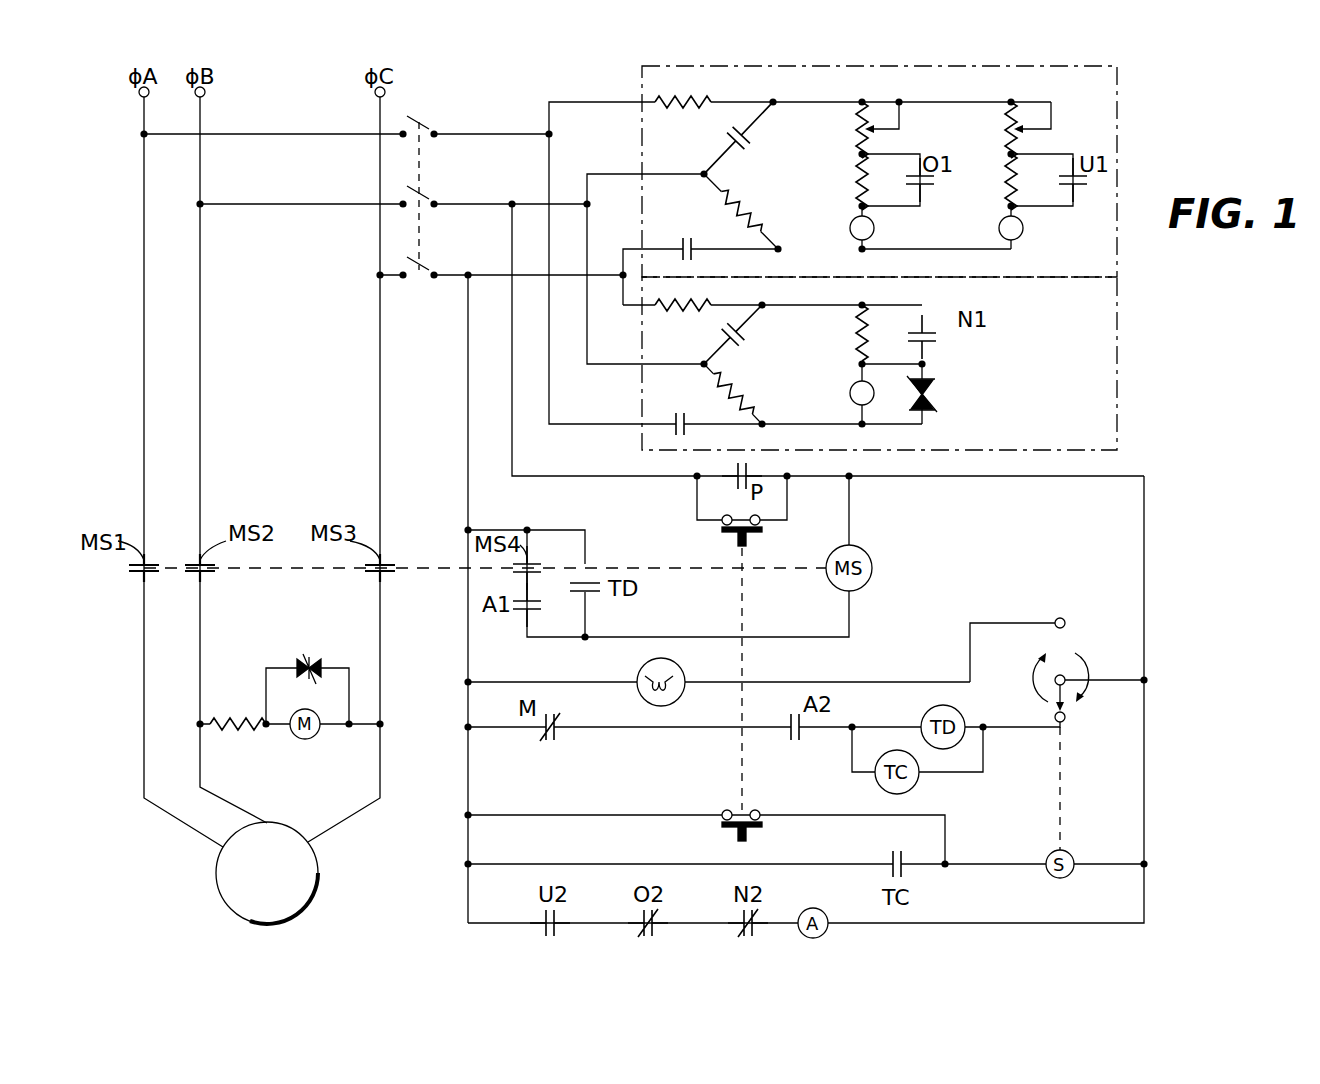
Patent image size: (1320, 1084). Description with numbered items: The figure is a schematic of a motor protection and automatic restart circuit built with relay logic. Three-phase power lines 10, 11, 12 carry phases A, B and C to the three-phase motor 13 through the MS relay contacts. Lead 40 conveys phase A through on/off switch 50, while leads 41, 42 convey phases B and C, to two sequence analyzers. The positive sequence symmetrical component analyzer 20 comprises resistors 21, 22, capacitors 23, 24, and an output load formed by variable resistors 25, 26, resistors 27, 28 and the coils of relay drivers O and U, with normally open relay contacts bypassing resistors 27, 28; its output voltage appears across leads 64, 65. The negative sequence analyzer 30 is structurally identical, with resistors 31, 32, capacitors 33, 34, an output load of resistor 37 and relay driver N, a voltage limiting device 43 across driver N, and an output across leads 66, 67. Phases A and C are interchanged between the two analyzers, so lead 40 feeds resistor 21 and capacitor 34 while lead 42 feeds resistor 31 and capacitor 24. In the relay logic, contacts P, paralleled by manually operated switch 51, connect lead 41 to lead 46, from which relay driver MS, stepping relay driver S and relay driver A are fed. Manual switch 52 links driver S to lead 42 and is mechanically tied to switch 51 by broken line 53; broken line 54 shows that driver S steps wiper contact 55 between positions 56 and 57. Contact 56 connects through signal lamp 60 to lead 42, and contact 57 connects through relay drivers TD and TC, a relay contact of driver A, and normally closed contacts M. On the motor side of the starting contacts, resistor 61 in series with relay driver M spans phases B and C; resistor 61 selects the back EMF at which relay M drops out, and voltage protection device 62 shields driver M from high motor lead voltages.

The power line 10 is at (144, 322).
The power line 11 is at (200, 344).
The power line 12 is at (380, 394).
The three-phase motor 13 is at (216, 876).
The positive sequence symmetrical component analyzer 20 is at (1117, 122).
The resistor 21 is at (686, 100).
The resistor 22 is at (738, 216).
The capacitor 23 is at (757, 150).
The capacitor 24 is at (683, 243).
The variable resistor 25 is at (860, 126).
The variable resistor 26 is at (1008, 122).
The resistor 27 is at (858, 196).
The resistor 28 is at (1008, 198).
The negative sequence analyzer 30 is at (1117, 312).
The resistor 31 is at (690, 303).
The resistor 32 is at (738, 397).
The capacitor 33 is at (745, 346).
The capacitor 34 is at (678, 414).
The resistor 37 is at (858, 341).
The lead 40 is at (545, 132).
The lead 41 is at (506, 202).
The lead 42 is at (490, 274).
The voltage limiting device 43 is at (935, 393).
The lead 46 is at (1105, 478).
The on/off switch 50 is at (410, 118).
The manually operated switch 51 is at (726, 536).
The manual switch 52 is at (723, 831).
The broken line 53 is at (742, 752).
The broken line 54 is at (1062, 778).
The wiper contact 55 is at (1068, 683).
The contact 56 is at (1064, 620).
The contact 57 is at (1066, 718).
The signal lamp 60 is at (652, 661).
The resistor 61 is at (240, 718).
The voltage protection device 62 is at (313, 660).
The lead 64 is at (972, 104).
The lead 65 is at (966, 248).
The lead 66 is at (898, 305).
The lead 67 is at (862, 426).